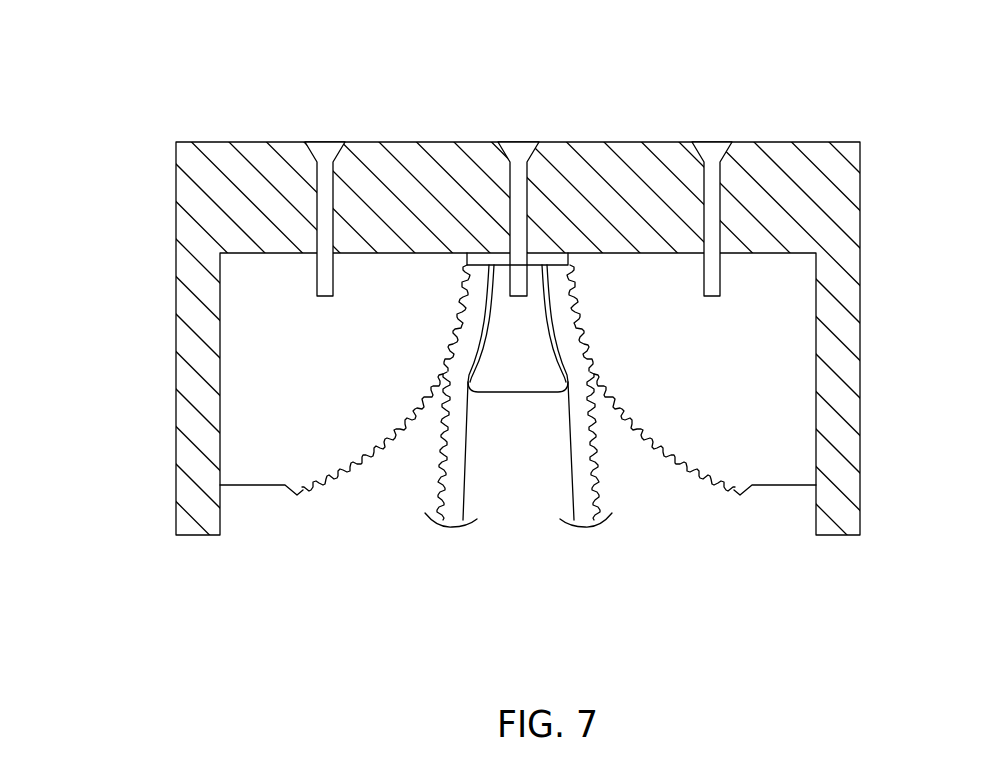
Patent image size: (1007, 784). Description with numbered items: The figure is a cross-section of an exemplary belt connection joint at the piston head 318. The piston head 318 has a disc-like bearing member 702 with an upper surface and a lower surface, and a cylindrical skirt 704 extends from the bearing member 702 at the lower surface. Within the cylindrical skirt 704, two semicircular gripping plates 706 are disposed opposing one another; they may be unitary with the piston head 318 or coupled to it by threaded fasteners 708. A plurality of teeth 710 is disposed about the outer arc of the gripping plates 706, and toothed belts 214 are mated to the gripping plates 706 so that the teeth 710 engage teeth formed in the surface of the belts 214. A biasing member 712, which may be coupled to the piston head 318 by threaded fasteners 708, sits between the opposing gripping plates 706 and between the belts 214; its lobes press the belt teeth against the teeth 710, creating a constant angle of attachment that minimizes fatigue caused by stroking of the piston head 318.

The piston head 318 is at (93, 66).
The bearing member 702 is at (642, 163).
The cylindrical skirt 704 is at (853, 332).
The gripping plates 706 is at (330, 352).
The threaded fasteners 708 is at (333, 184).
The teeth 710 is at (332, 470).
The biasing member 712 is at (537, 371).
The belts 214 is at (437, 503).